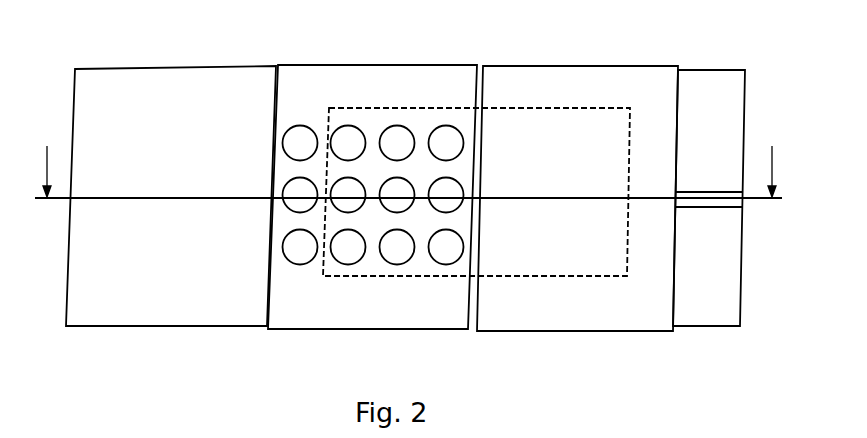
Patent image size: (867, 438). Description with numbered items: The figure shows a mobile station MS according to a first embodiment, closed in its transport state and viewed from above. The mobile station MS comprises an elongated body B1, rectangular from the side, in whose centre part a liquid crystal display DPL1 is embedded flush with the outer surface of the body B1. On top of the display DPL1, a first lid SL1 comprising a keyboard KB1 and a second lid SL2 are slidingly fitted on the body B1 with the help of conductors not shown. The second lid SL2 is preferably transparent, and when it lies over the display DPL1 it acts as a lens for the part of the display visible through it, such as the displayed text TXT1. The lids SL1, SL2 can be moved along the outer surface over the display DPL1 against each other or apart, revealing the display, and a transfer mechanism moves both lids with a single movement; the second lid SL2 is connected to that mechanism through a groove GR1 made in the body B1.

The mobile station MS is at (72, 35).
The body B1 is at (150, 68).
The keyboard KB1 is at (288, 130).
The first lid SL1 is at (353, 64).
The second lid SL2 is at (525, 64).
The liquid crystal display DPL1 is at (590, 108).
The text on display TXT1 is at (555, 171).
The groove GR1 is at (717, 210).